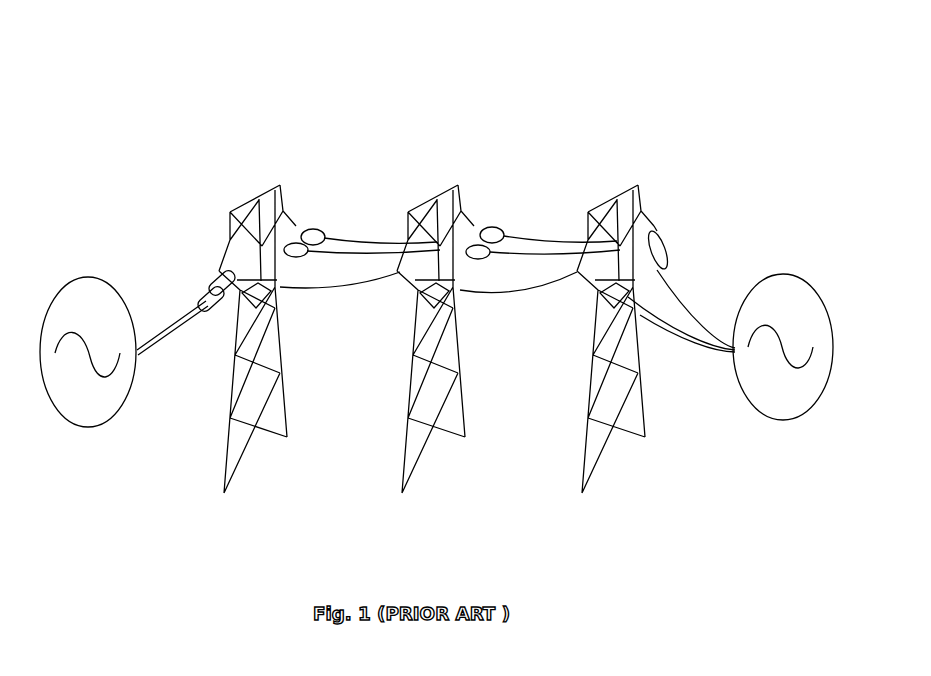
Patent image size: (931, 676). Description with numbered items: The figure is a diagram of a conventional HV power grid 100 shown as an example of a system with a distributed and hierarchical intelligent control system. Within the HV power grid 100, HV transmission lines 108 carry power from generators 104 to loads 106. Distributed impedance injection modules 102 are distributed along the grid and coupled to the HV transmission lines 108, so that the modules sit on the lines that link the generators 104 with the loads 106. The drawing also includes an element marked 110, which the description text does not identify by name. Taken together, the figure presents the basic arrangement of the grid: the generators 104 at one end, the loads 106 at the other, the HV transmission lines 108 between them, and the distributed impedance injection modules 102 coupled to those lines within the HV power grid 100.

The HV power grid 100 is at (436, 261).
The distributed impedance injection module 102 is at (313, 225).
The generator 104 is at (88, 278).
The load 106 is at (530, 235).
The HV transmission line 108 is at (781, 273).
The insulator 110 is at (223, 273).